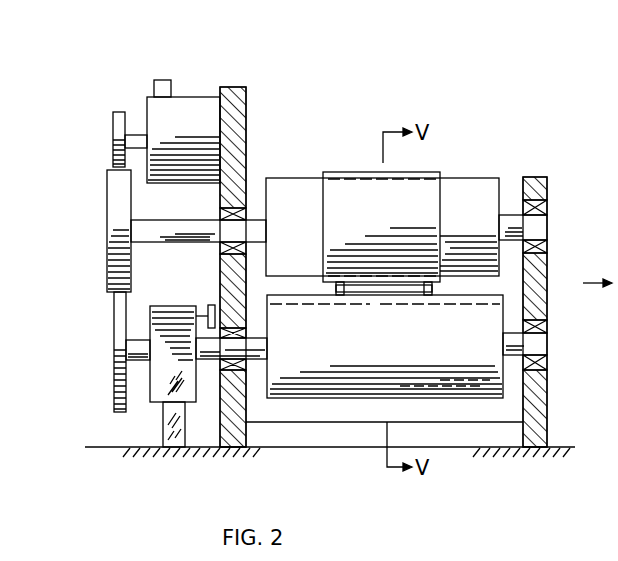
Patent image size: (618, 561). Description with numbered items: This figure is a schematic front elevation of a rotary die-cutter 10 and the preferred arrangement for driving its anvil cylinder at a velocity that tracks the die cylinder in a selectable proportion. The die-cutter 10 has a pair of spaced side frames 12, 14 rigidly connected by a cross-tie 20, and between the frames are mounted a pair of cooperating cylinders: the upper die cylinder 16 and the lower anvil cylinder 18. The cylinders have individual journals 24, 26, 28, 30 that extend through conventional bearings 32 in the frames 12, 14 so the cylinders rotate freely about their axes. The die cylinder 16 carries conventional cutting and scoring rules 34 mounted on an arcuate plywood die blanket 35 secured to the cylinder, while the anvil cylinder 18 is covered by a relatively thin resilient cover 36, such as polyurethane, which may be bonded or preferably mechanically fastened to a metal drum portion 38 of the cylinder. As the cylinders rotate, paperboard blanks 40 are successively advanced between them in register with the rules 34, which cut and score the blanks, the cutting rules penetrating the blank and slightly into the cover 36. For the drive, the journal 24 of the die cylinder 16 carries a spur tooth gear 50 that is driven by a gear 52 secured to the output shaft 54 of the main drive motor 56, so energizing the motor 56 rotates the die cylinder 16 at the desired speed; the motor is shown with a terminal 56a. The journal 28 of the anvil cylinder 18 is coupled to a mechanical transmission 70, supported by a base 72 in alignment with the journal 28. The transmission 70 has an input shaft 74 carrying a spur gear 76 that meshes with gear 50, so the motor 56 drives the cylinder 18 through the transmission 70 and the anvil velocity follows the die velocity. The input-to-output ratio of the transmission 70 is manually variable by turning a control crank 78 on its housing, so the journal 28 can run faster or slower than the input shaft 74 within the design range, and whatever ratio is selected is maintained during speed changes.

The die-cutter 10 is at (388, 110).
The side frame 12 is at (235, 87).
The side frame 14 is at (535, 177).
The die cylinder 16 is at (462, 178).
The anvil cylinder 18 is at (492, 398).
The cross-tie 20 is at (357, 422).
The journal 24 is at (200, 220).
The journal 26 is at (503, 215).
The journal 28 is at (211, 365).
The journal 30 is at (511, 334).
The bearings 32 is at (243, 215).
The cutting and scoring rules 34 is at (436, 307).
The die blanket 35 is at (406, 172).
The resilient cover 36 is at (323, 305).
The metal drum portion 38 is at (432, 288).
The paperboard blank 40 is at (339, 290).
The spur tooth gear 50 is at (107, 200).
The gear 52 is at (113, 118).
The output shaft 54 is at (136, 130).
The main drive motor 56 is at (182, 97).
The motor terminal 56a is at (163, 80).
The mechanical transmission 70 is at (178, 306).
The base 72 is at (163, 433).
The input shaft 74 is at (138, 362).
The spur gear 76 is at (114, 395).
The control crank 78 is at (210, 305).